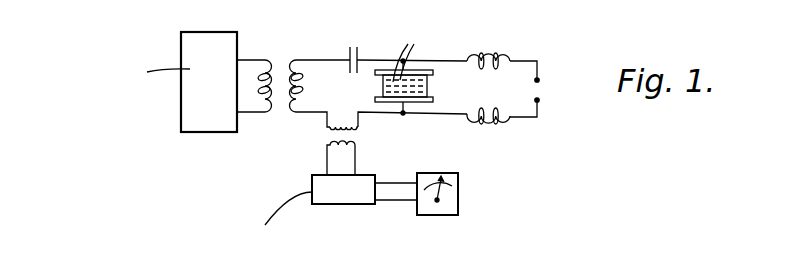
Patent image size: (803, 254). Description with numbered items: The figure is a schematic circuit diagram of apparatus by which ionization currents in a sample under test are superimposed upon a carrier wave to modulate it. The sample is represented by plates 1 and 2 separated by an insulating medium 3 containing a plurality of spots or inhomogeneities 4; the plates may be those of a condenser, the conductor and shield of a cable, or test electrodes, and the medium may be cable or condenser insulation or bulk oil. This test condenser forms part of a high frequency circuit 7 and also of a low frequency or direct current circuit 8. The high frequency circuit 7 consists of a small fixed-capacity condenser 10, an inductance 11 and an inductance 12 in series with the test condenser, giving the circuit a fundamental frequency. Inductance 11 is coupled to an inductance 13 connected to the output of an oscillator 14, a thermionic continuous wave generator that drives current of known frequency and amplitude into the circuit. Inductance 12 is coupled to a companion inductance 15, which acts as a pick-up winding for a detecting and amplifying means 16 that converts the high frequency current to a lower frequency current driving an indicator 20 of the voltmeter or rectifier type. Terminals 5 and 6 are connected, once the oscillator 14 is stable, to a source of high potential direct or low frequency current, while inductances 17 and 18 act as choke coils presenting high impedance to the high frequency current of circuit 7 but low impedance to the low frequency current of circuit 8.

The plate 1 is at (430, 72).
The plate 2 is at (425, 103).
The insulating medium 3 is at (425, 90).
The spots or inhomogeneities 4 is at (404, 55).
The terminal 5 is at (540, 80).
The terminal 6 is at (540, 100).
The high frequency circuit 7 is at (316, 58).
The low frequency or direct current circuit 8 is at (523, 78).
The condenser 10 is at (353, 45).
The inductance 11 is at (301, 85).
The inductance 12 is at (337, 121).
The inductance 13 is at (256, 58).
The oscillator 14 is at (203, 42).
The inductance 15 is at (330, 151).
The detecting and amplifying means 16 is at (353, 200).
The inductance 17 is at (489, 55).
The inductance 18 is at (488, 125).
The indicator 20 is at (460, 195).